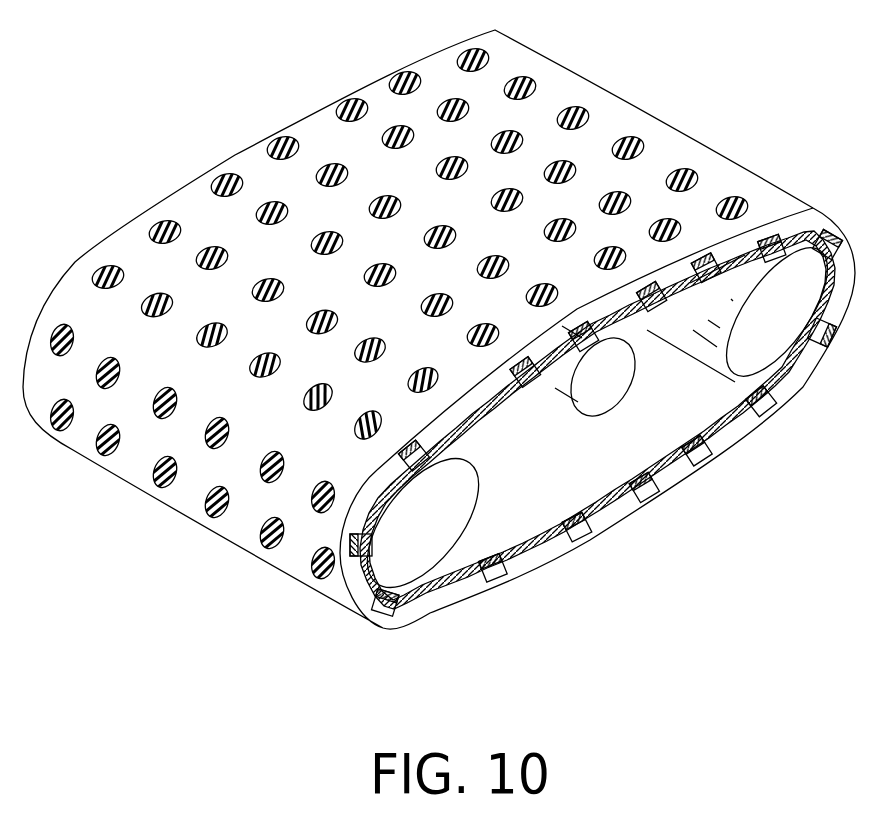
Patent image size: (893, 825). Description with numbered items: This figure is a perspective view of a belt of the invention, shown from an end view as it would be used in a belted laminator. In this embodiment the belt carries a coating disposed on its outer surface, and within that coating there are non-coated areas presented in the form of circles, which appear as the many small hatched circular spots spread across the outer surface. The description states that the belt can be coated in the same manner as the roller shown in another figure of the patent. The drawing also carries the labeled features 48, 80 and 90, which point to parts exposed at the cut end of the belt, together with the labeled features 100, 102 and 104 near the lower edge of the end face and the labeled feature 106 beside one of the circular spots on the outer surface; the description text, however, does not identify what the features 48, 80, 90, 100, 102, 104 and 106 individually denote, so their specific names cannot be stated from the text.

The wall 48 is at (723, 430).
The passage 80 is at (783, 360).
The passage 90 is at (625, 373).
The outer skin 100 is at (290, 567).
The pedestals 102 is at (420, 603).
The skin edge channel 104 is at (452, 598).
The holes 106 is at (158, 480).